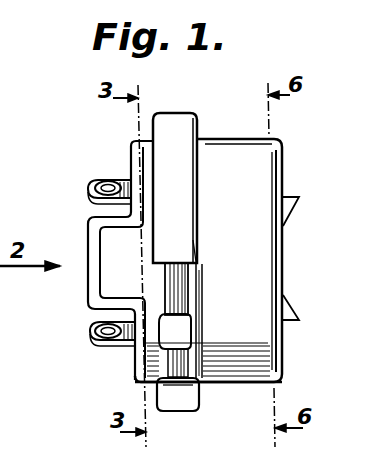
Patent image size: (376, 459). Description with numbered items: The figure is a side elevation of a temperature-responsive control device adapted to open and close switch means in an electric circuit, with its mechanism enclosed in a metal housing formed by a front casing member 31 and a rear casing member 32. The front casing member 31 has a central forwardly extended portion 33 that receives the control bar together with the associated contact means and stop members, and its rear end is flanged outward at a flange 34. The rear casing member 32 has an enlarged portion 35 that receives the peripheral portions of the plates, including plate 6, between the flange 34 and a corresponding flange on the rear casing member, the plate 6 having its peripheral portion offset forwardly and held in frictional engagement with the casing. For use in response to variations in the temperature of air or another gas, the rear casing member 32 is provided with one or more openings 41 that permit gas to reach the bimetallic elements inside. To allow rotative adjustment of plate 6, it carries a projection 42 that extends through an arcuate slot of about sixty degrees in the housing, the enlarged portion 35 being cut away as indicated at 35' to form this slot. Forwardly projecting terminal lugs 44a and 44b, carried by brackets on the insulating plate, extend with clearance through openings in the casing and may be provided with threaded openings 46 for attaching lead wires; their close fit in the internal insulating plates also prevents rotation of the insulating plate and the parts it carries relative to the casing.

The front casing member 31 is at (135, 366).
The rear casing member 32 is at (262, 263).
The central forwardly extended portion 33 is at (90, 240).
The flange 34 is at (168, 284).
The enlarged portion 35 is at (181, 165).
The cut-away portion 35' is at (217, 243).
The openings 41 is at (291, 197).
The projection 42 is at (172, 330).
The terminal lug 44a is at (92, 195).
The terminal lug 44b is at (93, 328).
The threaded openings 46 is at (114, 182).
The plate 6 is at (190, 300).